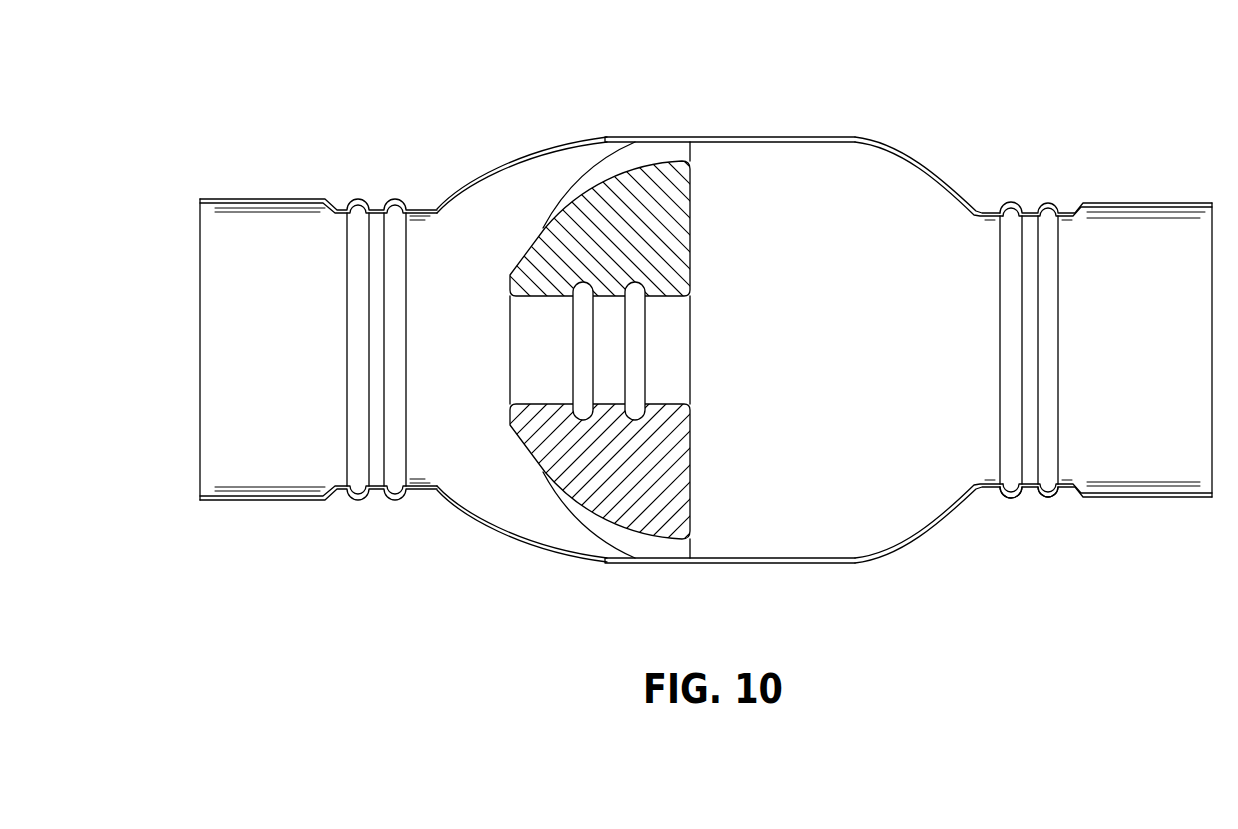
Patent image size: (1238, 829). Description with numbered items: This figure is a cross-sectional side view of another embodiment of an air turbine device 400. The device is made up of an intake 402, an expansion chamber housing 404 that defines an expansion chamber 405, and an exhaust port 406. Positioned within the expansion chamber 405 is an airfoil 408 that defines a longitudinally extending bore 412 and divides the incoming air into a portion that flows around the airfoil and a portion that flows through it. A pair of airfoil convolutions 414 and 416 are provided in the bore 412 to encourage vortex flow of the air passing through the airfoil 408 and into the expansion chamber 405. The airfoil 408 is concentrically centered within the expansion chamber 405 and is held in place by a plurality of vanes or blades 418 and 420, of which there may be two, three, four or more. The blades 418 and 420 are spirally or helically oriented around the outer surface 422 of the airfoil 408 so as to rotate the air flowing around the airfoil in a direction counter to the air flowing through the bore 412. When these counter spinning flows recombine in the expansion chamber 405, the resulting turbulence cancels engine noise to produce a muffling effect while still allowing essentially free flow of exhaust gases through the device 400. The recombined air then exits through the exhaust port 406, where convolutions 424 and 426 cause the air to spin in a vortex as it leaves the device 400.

The air turbine device 400 is at (957, 104).
The intake 402 is at (248, 198).
The expansion chamber housing 404 is at (718, 138).
The expansion chamber 405 is at (816, 153).
The exhaust port 406 is at (1120, 203).
The airfoil 408 is at (542, 228).
The longitudinally extending bore 412 is at (680, 318).
The airfoil convolution 414 is at (578, 362).
The airfoil convolution 416 is at (640, 360).
The vane or blade 418 is at (652, 150).
The vane or blade 420 is at (658, 548).
The outer surface 422 is at (533, 462).
The convolution 424 is at (1010, 498).
The convolution 426 is at (1047, 498).